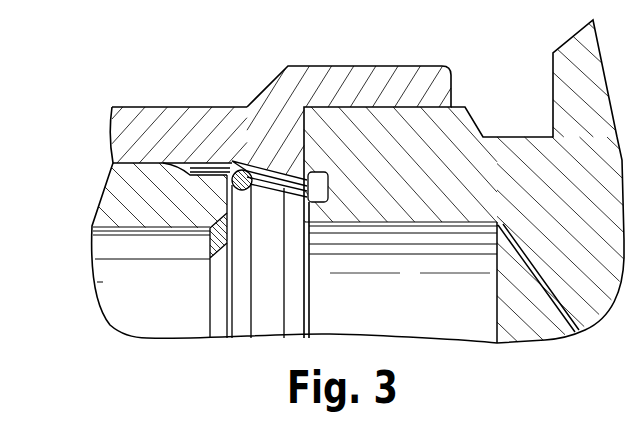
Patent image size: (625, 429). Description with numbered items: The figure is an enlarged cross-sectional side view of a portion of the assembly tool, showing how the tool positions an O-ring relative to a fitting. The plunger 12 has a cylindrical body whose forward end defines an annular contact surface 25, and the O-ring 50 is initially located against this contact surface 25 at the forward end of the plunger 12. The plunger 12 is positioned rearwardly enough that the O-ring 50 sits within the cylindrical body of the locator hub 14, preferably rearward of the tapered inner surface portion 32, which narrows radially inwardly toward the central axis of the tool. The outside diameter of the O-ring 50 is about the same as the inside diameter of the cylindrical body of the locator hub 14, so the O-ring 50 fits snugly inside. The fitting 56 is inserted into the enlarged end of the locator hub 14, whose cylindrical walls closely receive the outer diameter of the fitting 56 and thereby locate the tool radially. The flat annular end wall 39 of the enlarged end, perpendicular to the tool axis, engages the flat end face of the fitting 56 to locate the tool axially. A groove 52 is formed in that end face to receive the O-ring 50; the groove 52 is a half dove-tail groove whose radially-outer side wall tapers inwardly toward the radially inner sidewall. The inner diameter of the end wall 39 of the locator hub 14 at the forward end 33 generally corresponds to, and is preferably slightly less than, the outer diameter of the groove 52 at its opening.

The plunger 12 is at (118, 220).
The locator hub 14 is at (168, 116).
The annular contact surface 25 is at (210, 258).
The inner surface portion 32 is at (258, 170).
The second end 33 is at (286, 178).
The flat annular end wall 39 is at (305, 155).
The O-ring 50 is at (237, 170).
The groove 52 is at (330, 184).
The fitting 56 is at (512, 153).